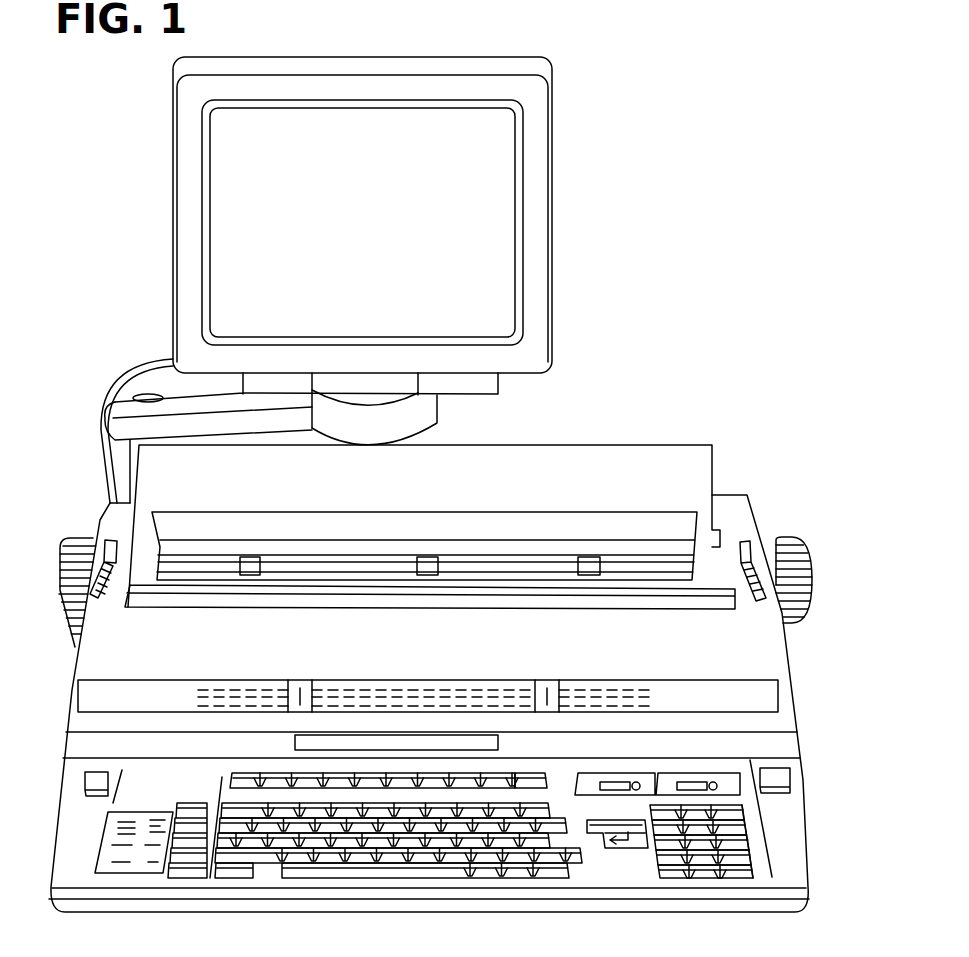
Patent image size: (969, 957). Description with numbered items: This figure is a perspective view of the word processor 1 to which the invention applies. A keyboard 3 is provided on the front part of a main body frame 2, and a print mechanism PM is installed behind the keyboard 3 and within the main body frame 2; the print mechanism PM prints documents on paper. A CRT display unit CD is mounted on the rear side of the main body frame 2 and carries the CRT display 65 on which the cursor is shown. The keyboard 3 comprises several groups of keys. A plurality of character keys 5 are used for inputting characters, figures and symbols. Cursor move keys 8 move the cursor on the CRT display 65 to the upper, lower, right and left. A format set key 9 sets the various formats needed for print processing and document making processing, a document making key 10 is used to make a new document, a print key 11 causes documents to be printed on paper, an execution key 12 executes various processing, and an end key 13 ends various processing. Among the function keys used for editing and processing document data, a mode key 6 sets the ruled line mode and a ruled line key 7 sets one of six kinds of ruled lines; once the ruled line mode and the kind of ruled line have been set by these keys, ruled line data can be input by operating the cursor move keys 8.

The word processor 1 is at (562, 216).
The CRT display unit CD is at (565, 78).
The CRT display 65 is at (362, 222).
The print mechanism PM is at (514, 530).
The main body frame 2 is at (788, 652).
The keyboard 3 is at (329, 908).
The character keys 5 is at (347, 835).
The mode key 6 is at (498, 778).
The ruled line key 7 is at (530, 778).
The cursor move keys 8 is at (678, 852).
The format set key 9 is at (744, 807).
The document making key 10 is at (745, 821).
The print key 11 is at (747, 836).
The execution key 12 is at (749, 852).
The end key 13 is at (740, 852).